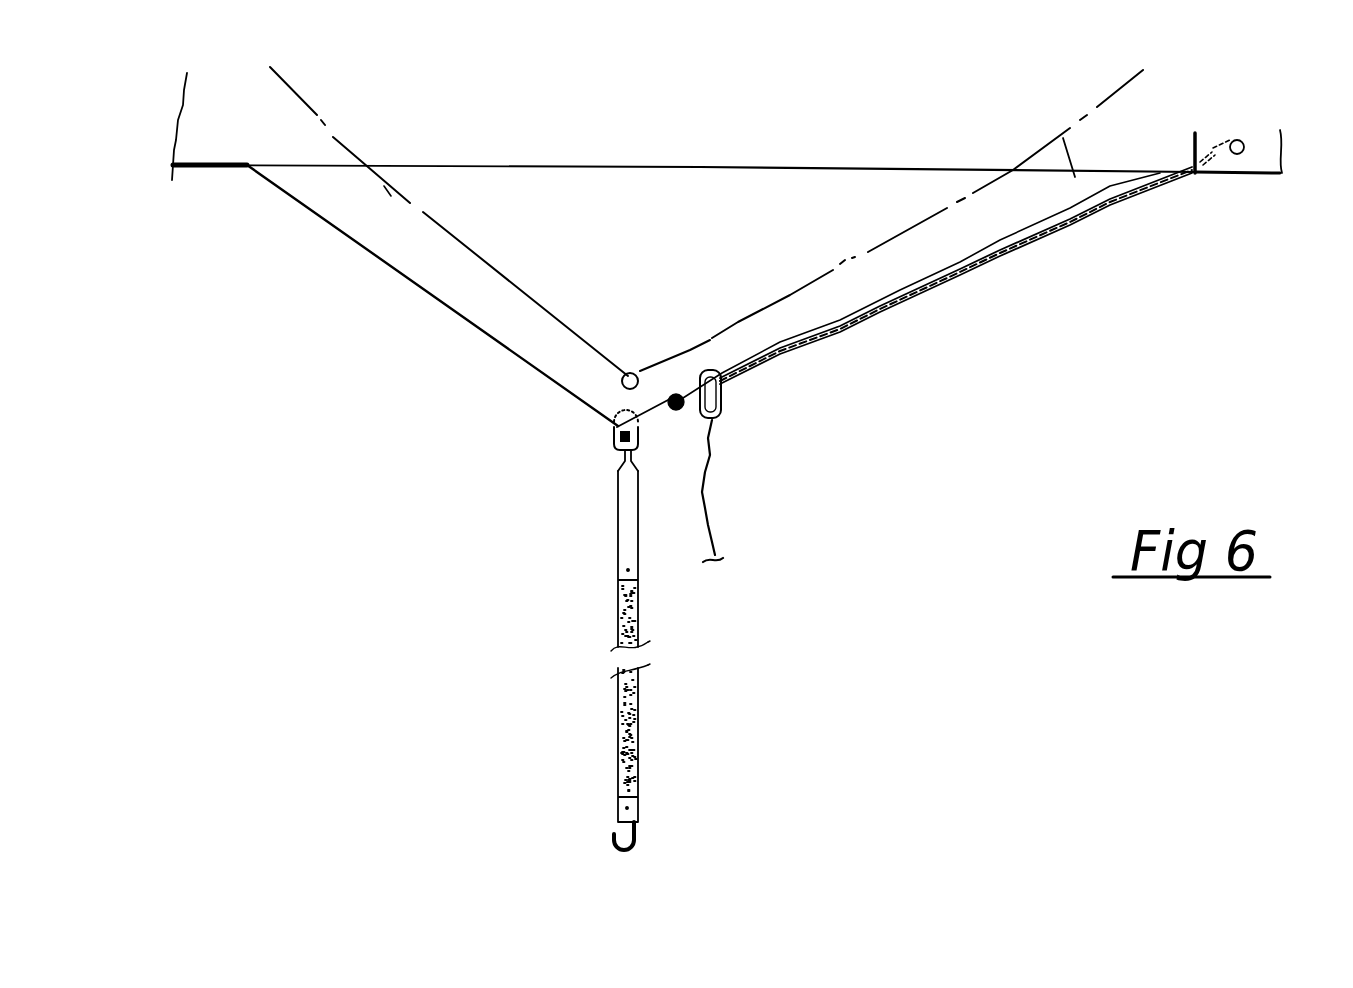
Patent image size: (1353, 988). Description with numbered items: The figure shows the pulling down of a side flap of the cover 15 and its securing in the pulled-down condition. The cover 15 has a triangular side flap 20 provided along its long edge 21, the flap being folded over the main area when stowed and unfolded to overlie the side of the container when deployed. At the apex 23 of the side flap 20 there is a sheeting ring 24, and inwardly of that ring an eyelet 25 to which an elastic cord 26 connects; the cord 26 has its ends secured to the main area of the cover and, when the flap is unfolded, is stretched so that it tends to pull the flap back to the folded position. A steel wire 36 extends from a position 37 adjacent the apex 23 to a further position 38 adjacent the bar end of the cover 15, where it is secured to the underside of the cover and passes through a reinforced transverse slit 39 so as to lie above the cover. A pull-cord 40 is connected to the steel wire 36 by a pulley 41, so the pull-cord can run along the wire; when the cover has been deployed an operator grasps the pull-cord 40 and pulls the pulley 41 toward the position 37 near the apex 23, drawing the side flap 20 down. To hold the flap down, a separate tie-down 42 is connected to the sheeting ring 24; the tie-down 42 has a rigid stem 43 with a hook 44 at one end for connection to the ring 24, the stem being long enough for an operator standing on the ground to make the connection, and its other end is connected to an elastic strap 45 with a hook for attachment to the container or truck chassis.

The cover 15 is at (475, 117).
The triangular side flap 20 is at (430, 273).
The long edge 21 is at (222, 168).
The apex 23 is at (615, 424).
The sheeting ring 24 is at (614, 436).
The eyelet 25 is at (623, 383).
The elastic cord 26 is at (382, 202).
The steel wire 36 is at (903, 303).
The position adjacent the apex 37 is at (678, 412).
The further position 38 is at (1242, 177).
The transverse slit 39 is at (1195, 175).
The pull-cord 40 is at (710, 513).
The pulley 41 is at (723, 395).
The tie-down 42 is at (707, 671).
The rigid stem 43 is at (620, 548).
The hook 44 is at (615, 450).
The elastic strap 45 is at (620, 700).